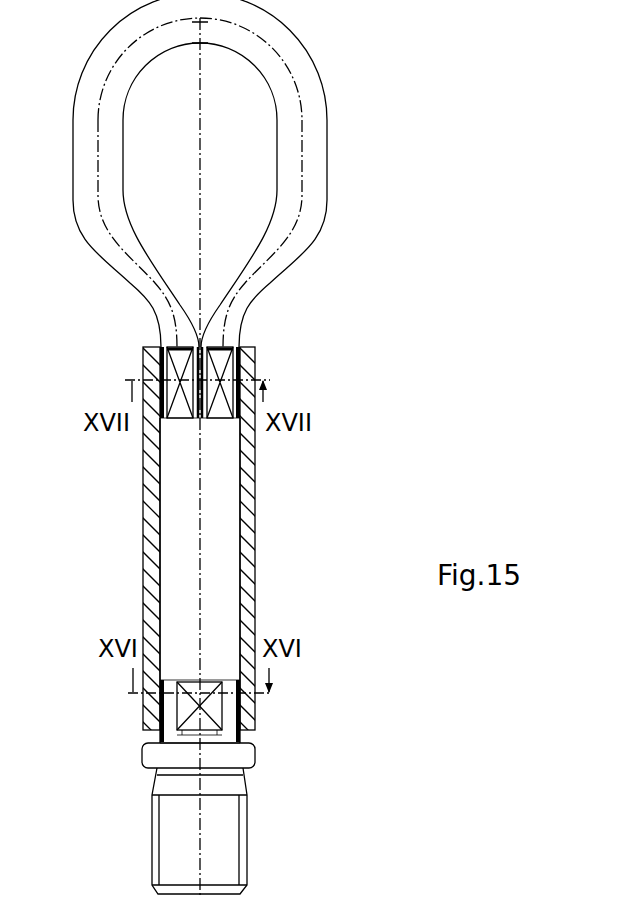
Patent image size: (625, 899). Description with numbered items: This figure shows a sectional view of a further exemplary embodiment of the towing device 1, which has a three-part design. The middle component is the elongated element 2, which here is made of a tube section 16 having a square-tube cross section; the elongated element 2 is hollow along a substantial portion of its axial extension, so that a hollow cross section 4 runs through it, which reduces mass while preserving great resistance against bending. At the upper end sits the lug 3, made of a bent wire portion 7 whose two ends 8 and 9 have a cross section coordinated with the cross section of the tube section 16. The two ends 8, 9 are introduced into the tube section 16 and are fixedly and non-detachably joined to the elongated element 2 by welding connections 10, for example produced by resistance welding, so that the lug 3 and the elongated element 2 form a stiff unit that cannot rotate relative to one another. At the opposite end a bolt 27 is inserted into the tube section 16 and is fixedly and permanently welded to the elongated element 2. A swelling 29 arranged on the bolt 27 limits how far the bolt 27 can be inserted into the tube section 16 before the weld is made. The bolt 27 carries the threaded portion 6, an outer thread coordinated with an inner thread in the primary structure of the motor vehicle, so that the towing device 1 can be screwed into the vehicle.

The towing device 1 is at (266, 617).
The elongated element 2 is at (258, 588).
The lug 3 is at (328, 165).
The hollow cross section 4 is at (217, 523).
The threaded portion 6 is at (239, 856).
The wire portion 7 is at (313, 130).
The first end of the wire portion 8 is at (175, 333).
The second end of the wire portion 9 is at (225, 337).
The welding connections 10 is at (253, 423).
The tube section 16 is at (243, 552).
The bolt 27 is at (266, 810).
The swelling 29 is at (238, 758).